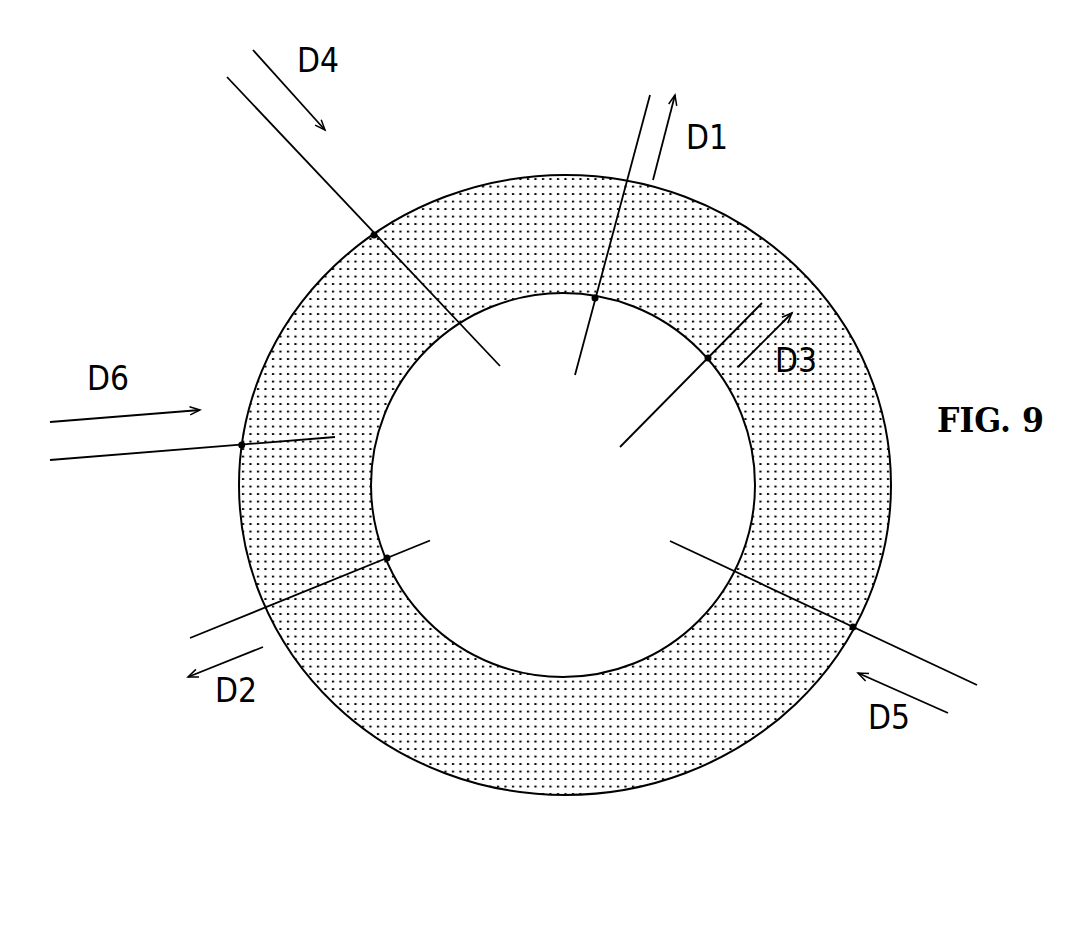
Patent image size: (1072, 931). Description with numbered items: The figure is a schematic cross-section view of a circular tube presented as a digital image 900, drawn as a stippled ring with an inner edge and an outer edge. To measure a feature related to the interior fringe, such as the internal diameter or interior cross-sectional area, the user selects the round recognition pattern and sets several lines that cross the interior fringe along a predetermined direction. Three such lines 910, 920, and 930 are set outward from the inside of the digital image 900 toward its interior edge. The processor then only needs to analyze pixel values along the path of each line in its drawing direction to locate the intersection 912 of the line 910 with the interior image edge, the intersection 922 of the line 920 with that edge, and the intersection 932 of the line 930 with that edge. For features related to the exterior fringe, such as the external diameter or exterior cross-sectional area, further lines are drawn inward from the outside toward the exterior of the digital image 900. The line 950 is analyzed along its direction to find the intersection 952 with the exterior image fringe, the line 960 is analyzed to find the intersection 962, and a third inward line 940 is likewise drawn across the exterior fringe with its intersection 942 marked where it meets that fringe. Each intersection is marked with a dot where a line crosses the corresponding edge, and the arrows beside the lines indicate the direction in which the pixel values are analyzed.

The digital image 900 is at (900, 178).
The line 910 is at (637, 143).
The intersection 912 is at (592, 300).
The line 920 is at (218, 627).
The intersection 922 is at (389, 556).
The line 930 is at (632, 436).
The intersection 932 is at (708, 362).
The fourth magnetization line 940 is at (246, 97).
The fourth intersection point 942 is at (370, 235).
The line 950 is at (970, 681).
The intersection 952 is at (855, 626).
The line 960 is at (72, 458).
The intersection 962 is at (240, 447).